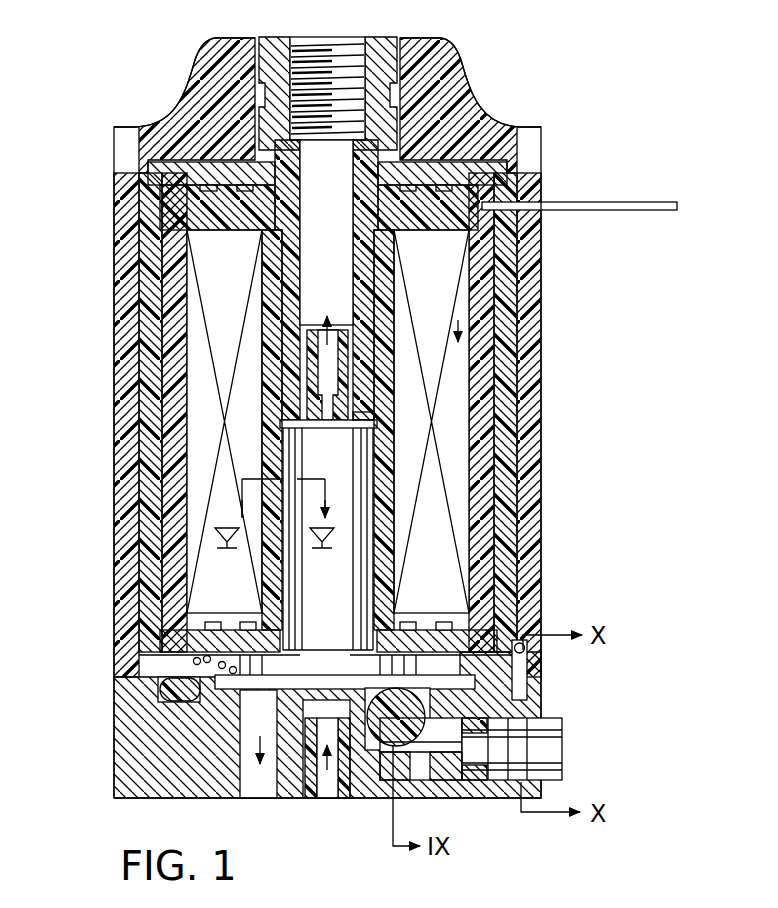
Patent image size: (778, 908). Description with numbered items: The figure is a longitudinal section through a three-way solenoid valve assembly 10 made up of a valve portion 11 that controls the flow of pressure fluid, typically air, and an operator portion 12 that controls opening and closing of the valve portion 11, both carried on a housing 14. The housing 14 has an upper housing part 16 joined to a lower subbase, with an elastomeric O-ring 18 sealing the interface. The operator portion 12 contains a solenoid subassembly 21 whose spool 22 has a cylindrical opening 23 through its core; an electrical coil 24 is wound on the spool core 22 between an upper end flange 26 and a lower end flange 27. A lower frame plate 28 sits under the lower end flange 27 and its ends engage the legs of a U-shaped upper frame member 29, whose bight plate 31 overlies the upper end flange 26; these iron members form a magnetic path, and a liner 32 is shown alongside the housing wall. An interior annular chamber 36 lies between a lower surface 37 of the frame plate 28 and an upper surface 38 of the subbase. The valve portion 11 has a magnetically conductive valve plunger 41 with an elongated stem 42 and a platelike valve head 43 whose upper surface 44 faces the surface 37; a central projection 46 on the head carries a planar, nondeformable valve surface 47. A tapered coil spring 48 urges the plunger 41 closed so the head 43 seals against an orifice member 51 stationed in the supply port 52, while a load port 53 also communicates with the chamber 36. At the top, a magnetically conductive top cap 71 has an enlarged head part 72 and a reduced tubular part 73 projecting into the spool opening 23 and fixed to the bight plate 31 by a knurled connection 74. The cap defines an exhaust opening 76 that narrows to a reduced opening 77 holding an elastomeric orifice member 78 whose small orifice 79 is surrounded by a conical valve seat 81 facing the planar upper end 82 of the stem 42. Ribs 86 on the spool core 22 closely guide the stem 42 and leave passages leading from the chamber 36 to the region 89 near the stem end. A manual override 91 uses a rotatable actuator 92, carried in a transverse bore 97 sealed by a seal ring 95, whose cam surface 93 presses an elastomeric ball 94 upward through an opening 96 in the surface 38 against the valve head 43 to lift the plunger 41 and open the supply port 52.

The solenoid valve assembly 10 is at (574, 99).
The valve portion 11 is at (123, 742).
The operator portion 12 is at (138, 319).
The housing 14 is at (113, 152).
The upper housing part 16 is at (122, 250).
The O-ring 18 is at (160, 692).
The solenoid subassembly 21 is at (487, 263).
The spool 22 is at (385, 485).
The cylindrical opening 23 is at (365, 412).
The electrical coil 24 is at (420, 587).
The upper end flange 26 is at (460, 197).
The lower end flange 27 is at (473, 622).
The lower frame plate 28 is at (172, 642).
The upper frame member 29 is at (152, 443).
The bight plate 31 is at (181, 170).
The liner 32 is at (480, 288).
The interior annular chamber 36 is at (210, 690).
The lower surface 37 is at (223, 650).
The upper surface 38 is at (222, 690).
The valve plunger 41 is at (367, 557).
The valve stem 42 is at (373, 450).
The valve head 43 is at (327, 668).
The upper surface 44 is at (285, 660).
The central projection 46 is at (266, 731).
The valve surface 47 is at (367, 670).
The tapered coil spring 48 is at (490, 680).
The orifice member 51 is at (350, 787).
The supply port 52 is at (305, 787).
The load port 53 is at (248, 787).
The top cap 71 is at (279, 40).
The head part 72 is at (376, 50).
The tubular part 73 is at (298, 193).
The knurled connection 74 is at (277, 177).
The exhaust opening 76 is at (336, 240).
The reduced diameter opening 77 is at (323, 327).
The orifice member 78 is at (313, 378).
The orifice 79 is at (350, 373).
The conical valve seat 81 is at (324, 539).
The upper end of valve stem 82 is at (350, 430).
The ribs 86 is at (373, 528).
The region 89 is at (287, 428).
The manual override 91 is at (467, 790).
The actuator 92 is at (547, 755).
The cam surface 93 is at (454, 758).
The ball 94 is at (390, 760).
The seal ring 95 is at (450, 703).
The opening 96 is at (425, 730).
The transverse bore 97 is at (440, 780).